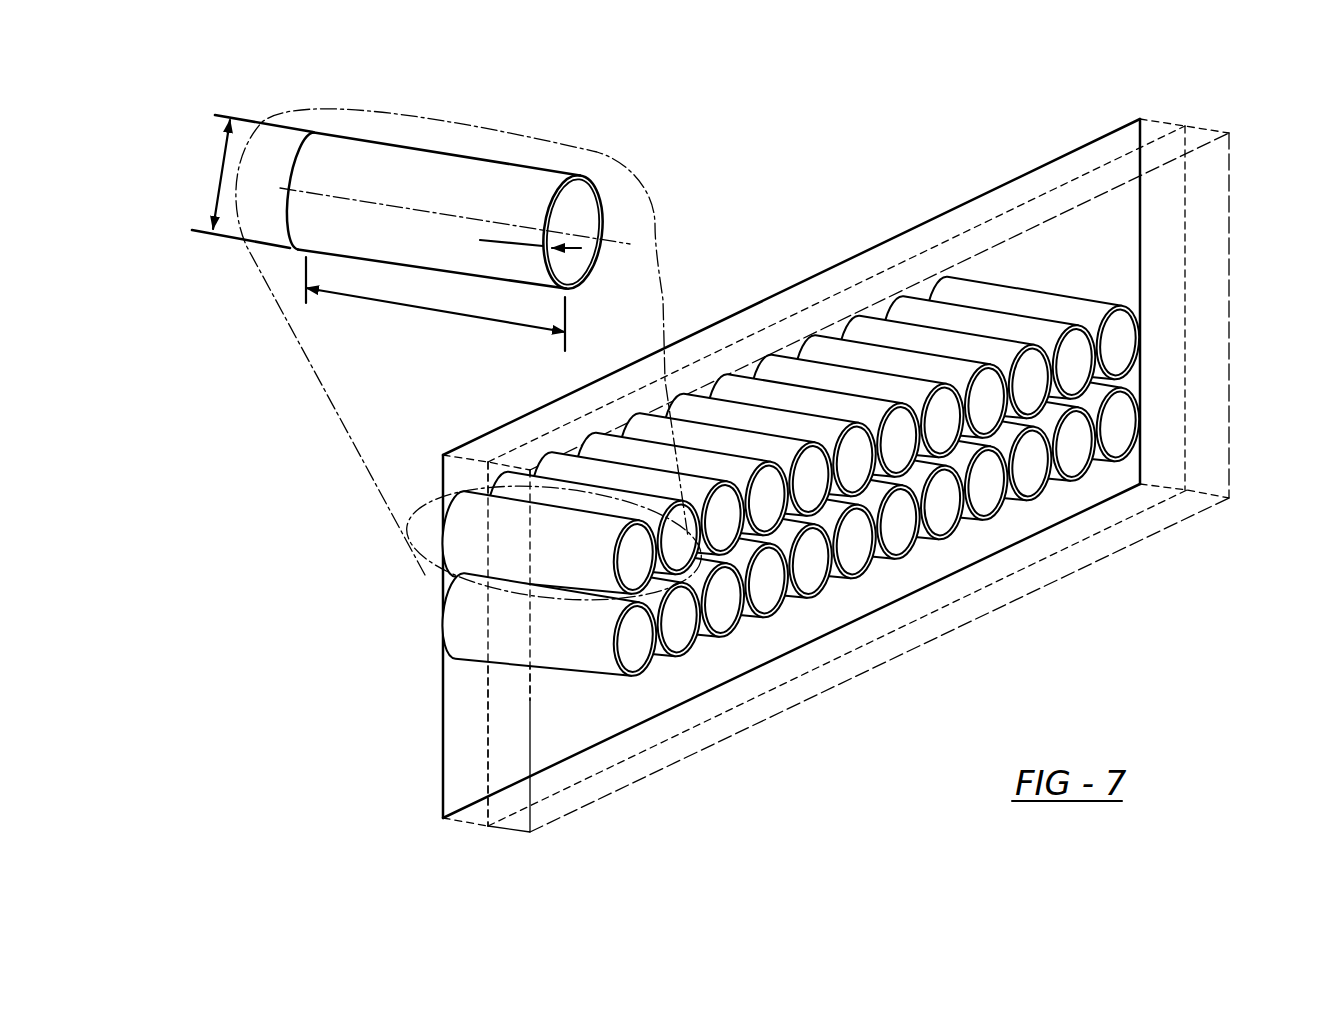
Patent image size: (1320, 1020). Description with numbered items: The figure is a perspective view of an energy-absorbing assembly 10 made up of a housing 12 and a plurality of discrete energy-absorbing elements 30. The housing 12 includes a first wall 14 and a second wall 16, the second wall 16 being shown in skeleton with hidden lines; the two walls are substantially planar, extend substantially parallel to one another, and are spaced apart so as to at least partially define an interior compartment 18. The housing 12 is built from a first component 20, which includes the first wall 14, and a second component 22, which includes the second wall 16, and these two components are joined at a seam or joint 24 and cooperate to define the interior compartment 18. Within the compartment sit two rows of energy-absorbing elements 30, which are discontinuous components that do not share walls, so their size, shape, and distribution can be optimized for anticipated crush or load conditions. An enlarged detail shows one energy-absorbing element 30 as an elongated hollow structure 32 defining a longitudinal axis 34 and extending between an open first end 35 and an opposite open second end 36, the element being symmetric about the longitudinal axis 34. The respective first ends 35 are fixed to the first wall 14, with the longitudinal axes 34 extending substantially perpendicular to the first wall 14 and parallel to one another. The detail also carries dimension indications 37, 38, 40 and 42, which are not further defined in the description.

The energy-absorbing assembly 10 is at (825, 462).
The housing 12 is at (1232, 205).
The first wall 14 is at (950, 227).
The second wall 16 is at (1040, 223).
The interior compartment 18 is at (1058, 505).
The first component 20 is at (458, 822).
The second component 22 is at (516, 828).
The seam or joint 24 is at (597, 770).
The discrete energy-absorbing element 30 is at (860, 327).
The elongated hollow structure 32 is at (582, 174).
The longitudinal axis 34 is at (618, 240).
The first end 35 is at (281, 210).
The second end 36 is at (606, 194).
The length 37 is at (448, 312).
The diameter 38 is at (224, 156).
The open end 40 is at (567, 290).
The wall thickness 42 is at (513, 242).